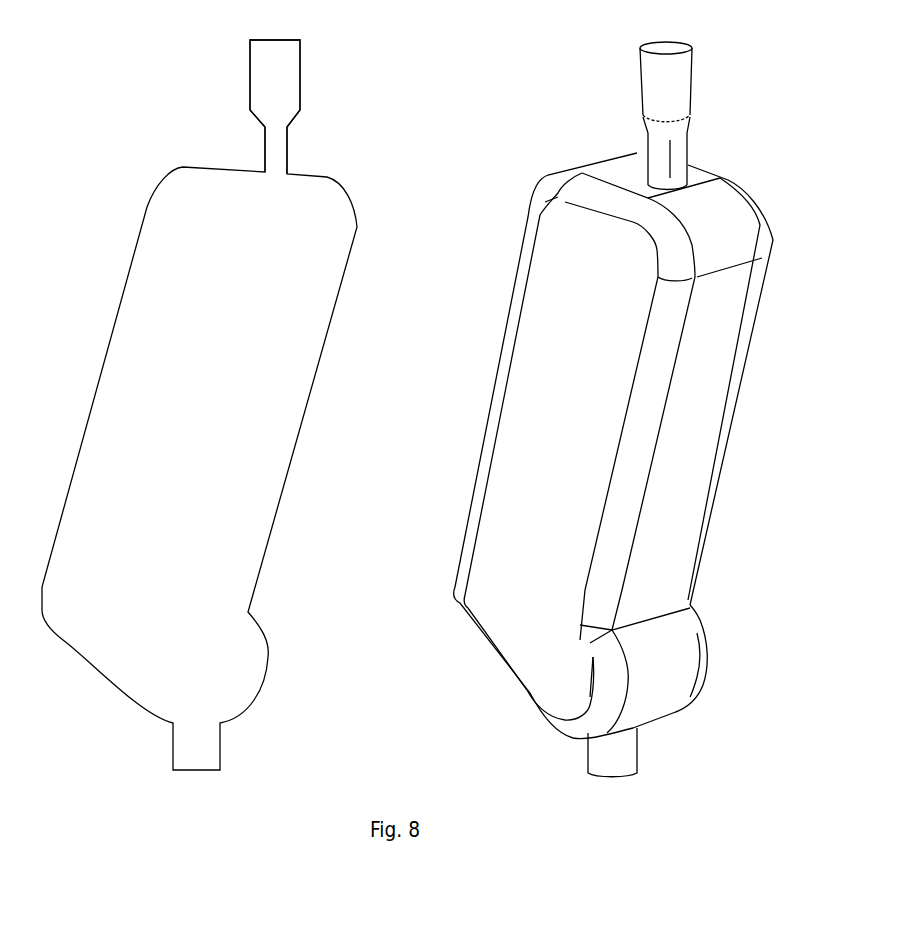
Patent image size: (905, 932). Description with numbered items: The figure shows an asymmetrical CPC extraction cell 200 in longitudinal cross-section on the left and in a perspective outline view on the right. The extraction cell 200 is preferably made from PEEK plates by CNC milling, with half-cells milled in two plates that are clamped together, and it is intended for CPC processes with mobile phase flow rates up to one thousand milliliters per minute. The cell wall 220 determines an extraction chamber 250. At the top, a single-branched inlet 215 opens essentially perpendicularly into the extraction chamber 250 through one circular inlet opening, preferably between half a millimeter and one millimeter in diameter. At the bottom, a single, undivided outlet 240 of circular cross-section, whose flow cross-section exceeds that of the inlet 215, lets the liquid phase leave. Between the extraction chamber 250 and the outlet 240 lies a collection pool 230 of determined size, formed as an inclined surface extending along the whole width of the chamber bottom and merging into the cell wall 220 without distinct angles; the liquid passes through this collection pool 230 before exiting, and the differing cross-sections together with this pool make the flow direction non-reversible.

The asymmetrical CPC extraction cell 200 is at (74, 62).
The inlet 215 is at (265, 142).
The cell wall 220 is at (712, 433).
The collection pool 230 is at (677, 692).
The outlet 240 is at (628, 757).
The extraction chamber 250 is at (268, 447).